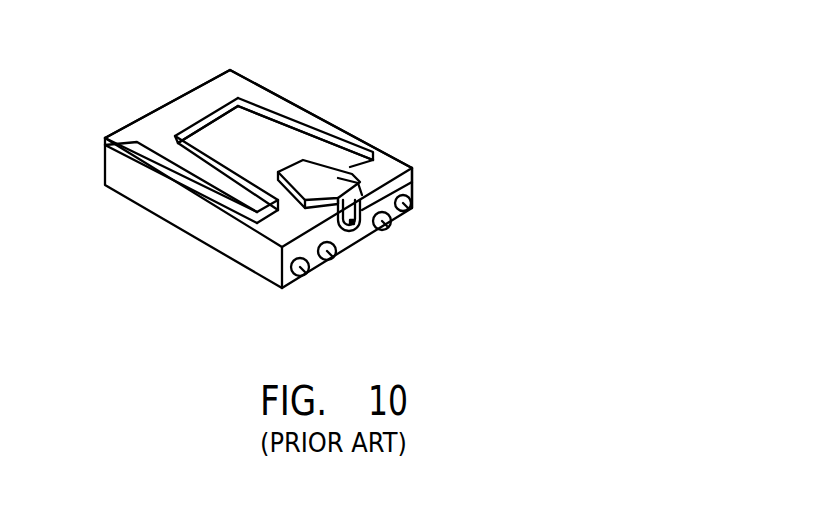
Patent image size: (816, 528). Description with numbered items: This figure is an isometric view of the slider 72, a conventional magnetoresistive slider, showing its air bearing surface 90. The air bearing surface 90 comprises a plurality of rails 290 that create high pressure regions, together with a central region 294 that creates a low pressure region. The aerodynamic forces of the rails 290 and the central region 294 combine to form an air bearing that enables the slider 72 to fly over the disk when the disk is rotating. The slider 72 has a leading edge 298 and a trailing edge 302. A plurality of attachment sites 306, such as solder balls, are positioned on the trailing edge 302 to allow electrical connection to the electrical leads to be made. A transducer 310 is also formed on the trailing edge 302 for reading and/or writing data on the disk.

The air bearing surface 90 is at (278, 67).
The rails 290 is at (213, 90).
The central region 294 is at (260, 154).
The leading edge 298 is at (128, 125).
The trailing edge 302 is at (412, 189).
The attachment sites 306 is at (308, 271).
The transducer 310 is at (375, 196).
The slider 72 is at (455, 172).